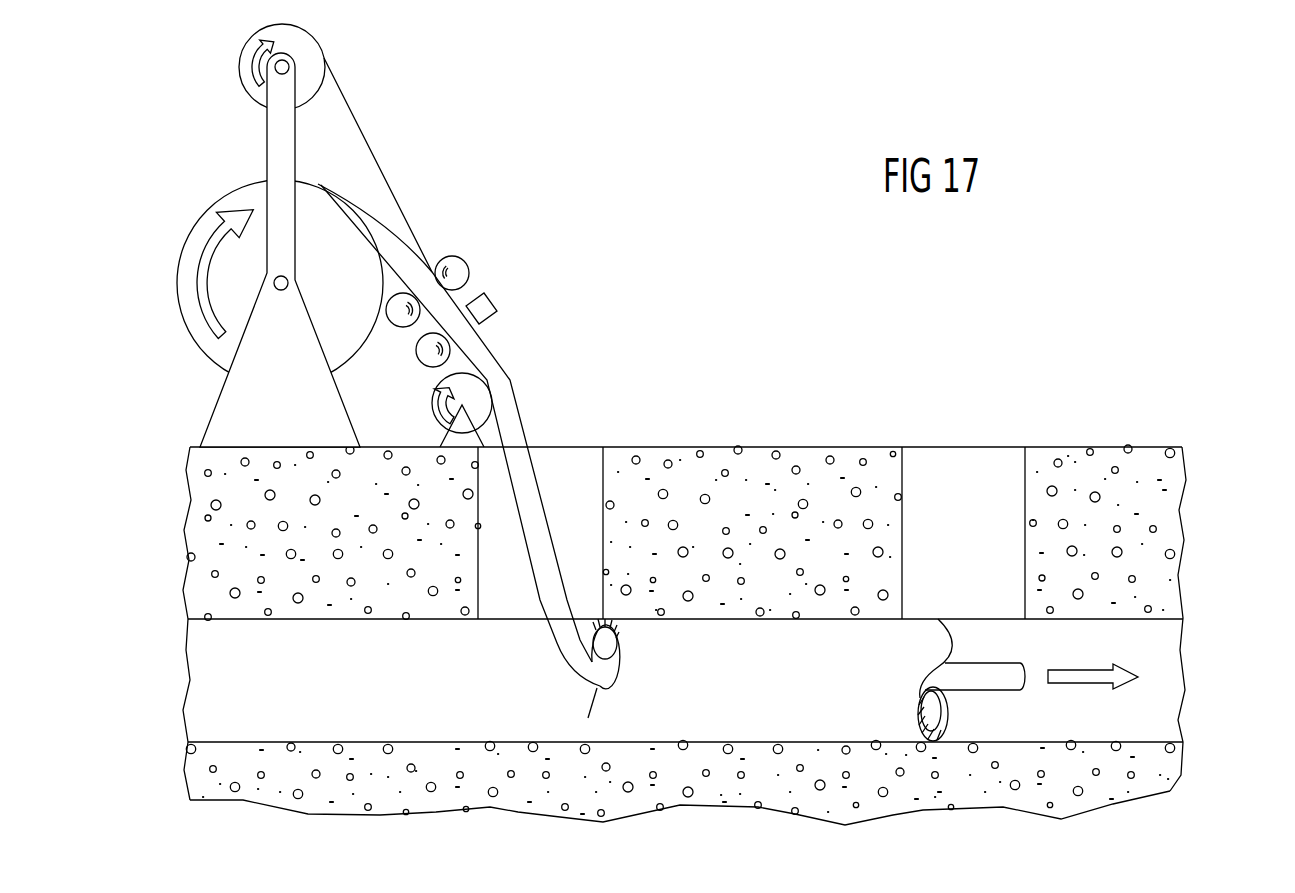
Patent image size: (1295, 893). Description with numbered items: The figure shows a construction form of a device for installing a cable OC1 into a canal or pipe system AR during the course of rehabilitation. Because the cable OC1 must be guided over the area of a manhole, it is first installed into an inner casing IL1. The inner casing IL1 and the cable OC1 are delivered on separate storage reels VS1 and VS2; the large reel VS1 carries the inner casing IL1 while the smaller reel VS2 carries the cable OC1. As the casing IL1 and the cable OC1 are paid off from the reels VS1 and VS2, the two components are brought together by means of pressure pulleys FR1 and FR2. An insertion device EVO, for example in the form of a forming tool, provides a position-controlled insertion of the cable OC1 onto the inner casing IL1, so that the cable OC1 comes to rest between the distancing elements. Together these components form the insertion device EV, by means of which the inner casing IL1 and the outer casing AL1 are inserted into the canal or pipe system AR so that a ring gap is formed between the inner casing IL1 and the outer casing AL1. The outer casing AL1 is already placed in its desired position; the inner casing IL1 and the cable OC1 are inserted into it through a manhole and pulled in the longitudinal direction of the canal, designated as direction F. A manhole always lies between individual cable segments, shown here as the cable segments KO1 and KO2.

The storage reel VS1 is at (237, 201).
The storage reel VS2 is at (240, 70).
The cable OC1 is at (360, 126).
The inner casing IL1 is at (390, 237).
The insertion device EV is at (532, 205).
The insertion device EVO is at (480, 312).
The pressure pulley FR1 is at (462, 270).
The pressure pulley FR2 is at (400, 318).
The cable segment KO1 is at (603, 487).
The cable segment KO2 is at (1025, 487).
The outer casing AL1 is at (780, 690).
The direction F is at (1083, 673).
The canal or pipe system AR is at (1176, 635).